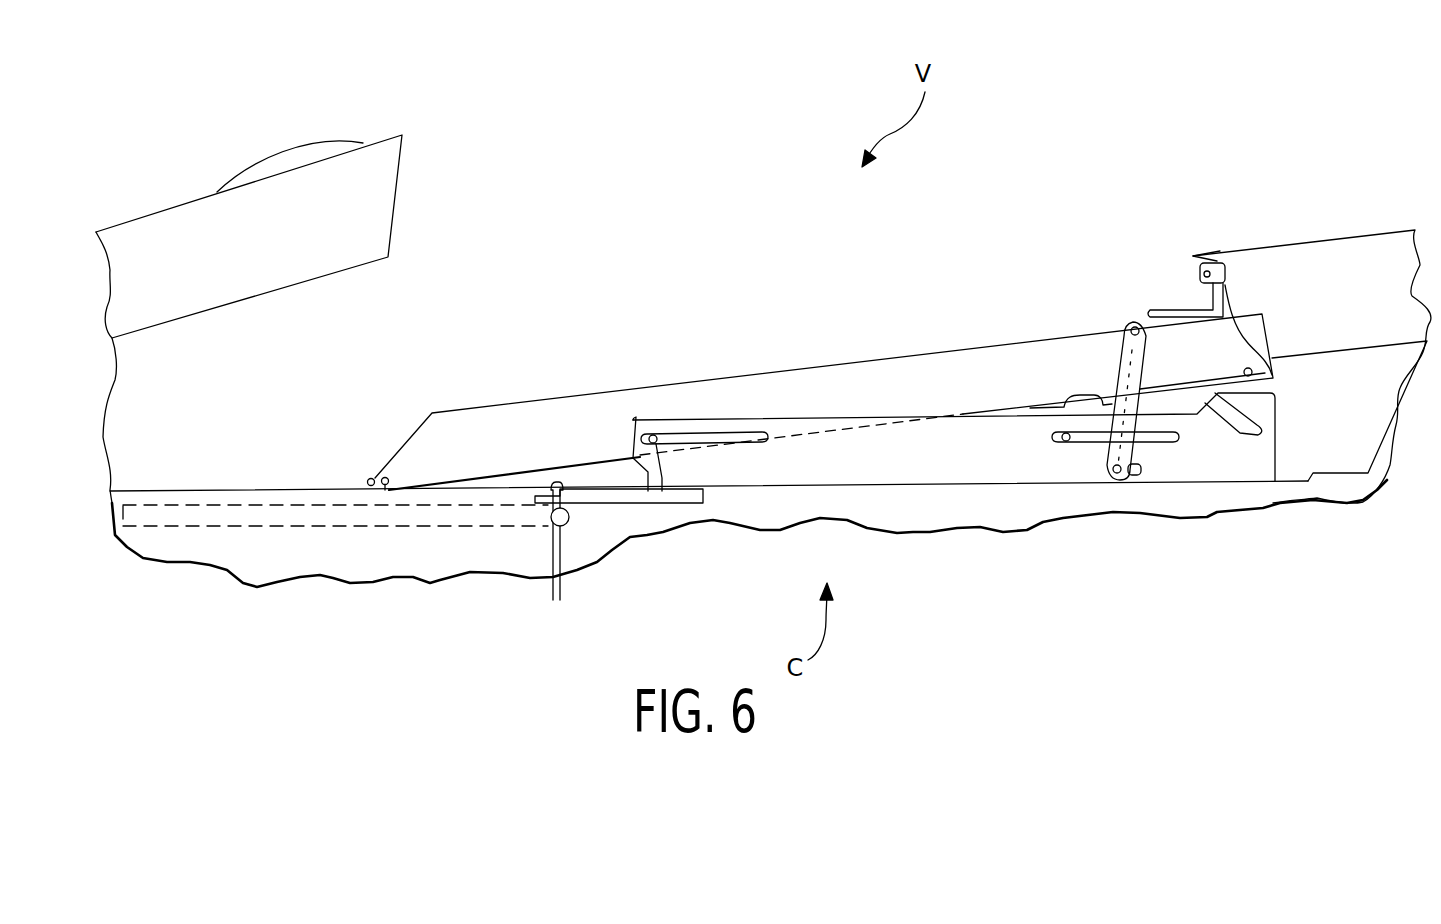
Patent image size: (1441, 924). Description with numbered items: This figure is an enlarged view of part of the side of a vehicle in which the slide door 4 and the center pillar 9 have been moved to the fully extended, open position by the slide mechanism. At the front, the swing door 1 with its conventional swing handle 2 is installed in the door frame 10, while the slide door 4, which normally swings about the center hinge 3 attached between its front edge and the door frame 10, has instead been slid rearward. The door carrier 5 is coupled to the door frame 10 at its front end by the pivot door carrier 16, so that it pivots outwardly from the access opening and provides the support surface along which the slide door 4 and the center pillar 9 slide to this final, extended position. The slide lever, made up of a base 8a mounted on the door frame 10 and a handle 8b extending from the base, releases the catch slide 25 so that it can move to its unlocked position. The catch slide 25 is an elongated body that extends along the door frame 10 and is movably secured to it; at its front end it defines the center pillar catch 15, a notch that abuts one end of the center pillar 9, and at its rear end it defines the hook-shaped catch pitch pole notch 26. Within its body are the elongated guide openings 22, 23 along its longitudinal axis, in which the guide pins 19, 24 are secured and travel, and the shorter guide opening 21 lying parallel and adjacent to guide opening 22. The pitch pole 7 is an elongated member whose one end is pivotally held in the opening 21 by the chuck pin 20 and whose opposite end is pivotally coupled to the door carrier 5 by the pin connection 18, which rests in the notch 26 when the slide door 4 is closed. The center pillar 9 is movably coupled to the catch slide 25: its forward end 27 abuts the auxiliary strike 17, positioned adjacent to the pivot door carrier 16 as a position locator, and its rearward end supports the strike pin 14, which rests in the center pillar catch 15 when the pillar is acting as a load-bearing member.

The swing door 1 is at (133, 215).
The swing handle 2 is at (263, 160).
The center hinge 3 is at (1213, 260).
The slide door 4 is at (1300, 242).
The door carrier 5 is at (824, 366).
The pitch pole 7 is at (1110, 360).
The base 8a is at (565, 520).
The handle 8b is at (548, 565).
The center pillar 9 is at (1175, 343).
The door frame 10 is at (1050, 483).
The strike pin 14 is at (1270, 425).
The center pillar catch 15 is at (653, 477).
The pivot door carrier 16 is at (385, 488).
The auxiliary strike 17 is at (372, 488).
The pin connection 18 is at (1133, 333).
The guide pin 19 is at (1070, 440).
The chuck pin 20 is at (1135, 476).
The guide opening 21 is at (1128, 478).
The guide opening 22 is at (1177, 442).
The guide opening 23 is at (725, 435).
The guide pin 24 is at (653, 440).
The catch slide 25 is at (848, 418).
The catch pitch pole notch 26 is at (1248, 376).
The forward end 27 is at (1073, 397).